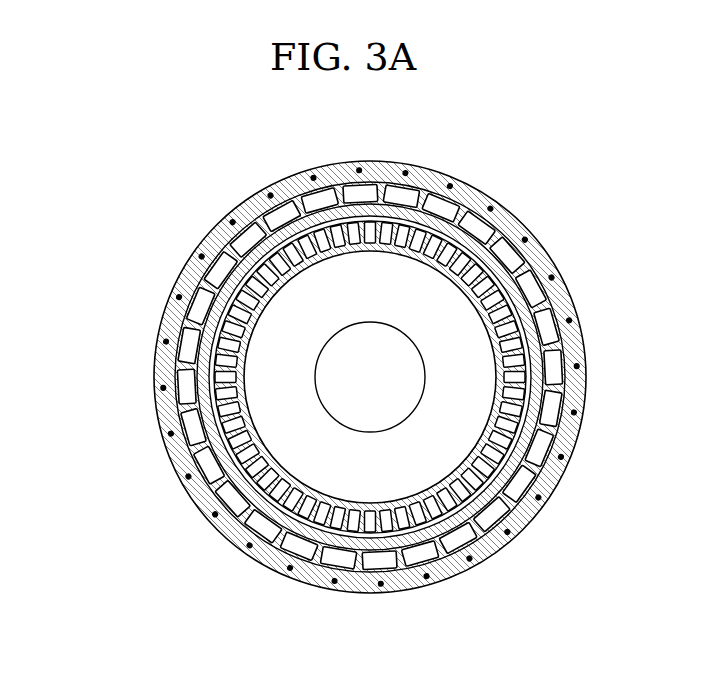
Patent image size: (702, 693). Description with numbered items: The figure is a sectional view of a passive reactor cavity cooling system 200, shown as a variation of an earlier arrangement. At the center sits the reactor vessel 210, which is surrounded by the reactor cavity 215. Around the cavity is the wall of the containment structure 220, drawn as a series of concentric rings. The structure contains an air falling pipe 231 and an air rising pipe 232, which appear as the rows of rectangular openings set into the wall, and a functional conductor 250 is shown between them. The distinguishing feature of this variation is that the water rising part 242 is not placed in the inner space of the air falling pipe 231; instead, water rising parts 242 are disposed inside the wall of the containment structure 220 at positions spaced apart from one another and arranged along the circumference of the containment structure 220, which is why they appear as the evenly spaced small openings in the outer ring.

The passive reactor cavity cooling system 200 is at (188, 238).
The reactor vessel 210 is at (333, 417).
The reactor cavity 215 is at (330, 492).
The containment structure 220 is at (193, 497).
The air falling pipe 231 is at (183, 360).
The air rising pipe 232 is at (190, 447).
The water rising part 242 is at (180, 298).
The functional conductor 250 is at (203, 395).